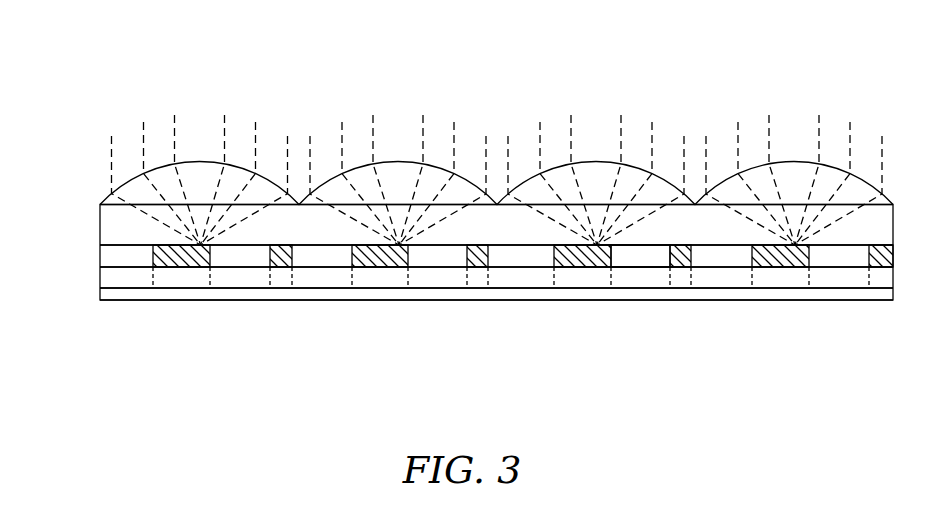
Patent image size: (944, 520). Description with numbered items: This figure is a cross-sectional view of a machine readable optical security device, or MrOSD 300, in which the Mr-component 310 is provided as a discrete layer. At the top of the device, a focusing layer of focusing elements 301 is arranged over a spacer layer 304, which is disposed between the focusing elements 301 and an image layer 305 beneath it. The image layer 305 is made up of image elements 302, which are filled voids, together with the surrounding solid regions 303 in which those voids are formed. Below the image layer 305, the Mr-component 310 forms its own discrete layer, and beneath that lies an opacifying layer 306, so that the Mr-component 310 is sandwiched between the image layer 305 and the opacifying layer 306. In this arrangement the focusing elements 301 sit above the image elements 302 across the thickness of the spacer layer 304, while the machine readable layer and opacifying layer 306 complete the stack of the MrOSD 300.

The machine readable optical security device 300 is at (127, 80).
The focusing elements 301 is at (101, 191).
The image elements 302 is at (278, 273).
The solid regions 303 is at (630, 259).
The spacer layer 304 is at (894, 228).
The image layer 305 is at (97, 256).
The opacifying layer 306 is at (95, 294).
The Mr-component 310 is at (96, 277).